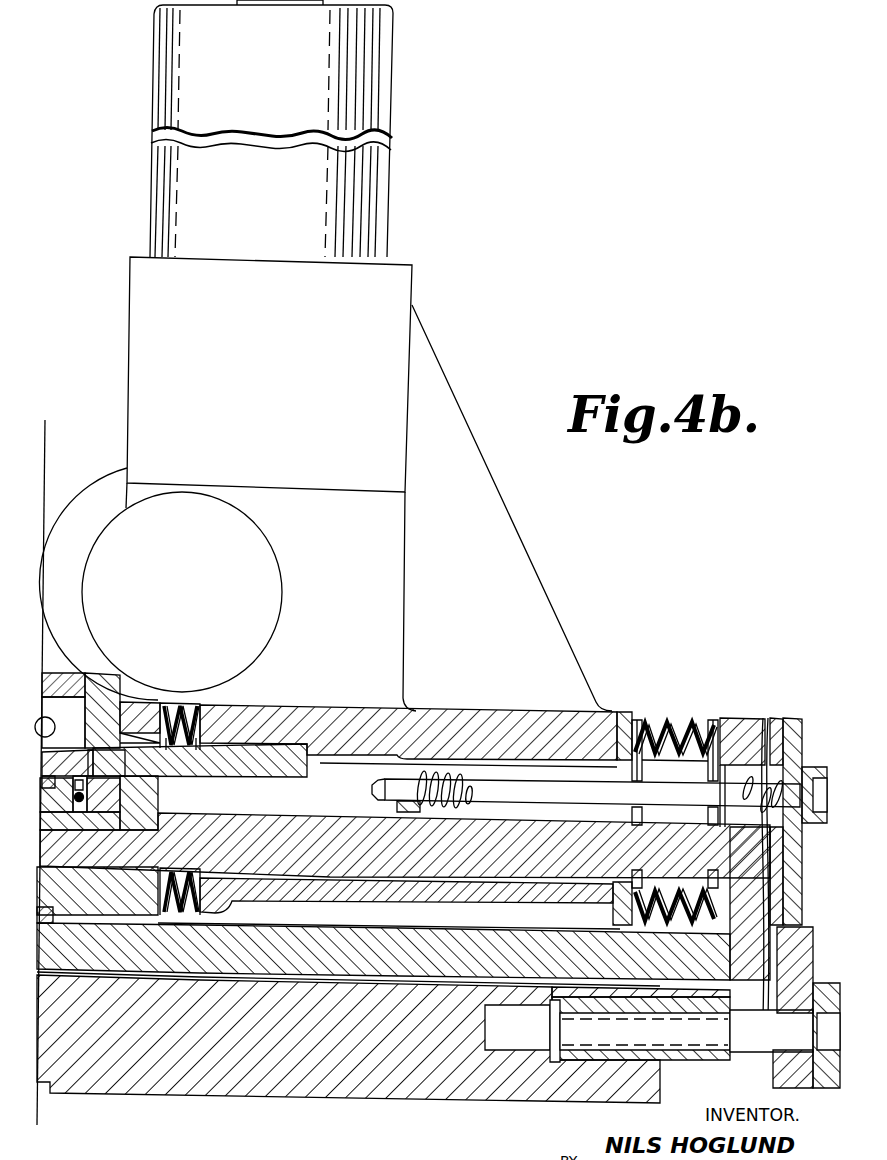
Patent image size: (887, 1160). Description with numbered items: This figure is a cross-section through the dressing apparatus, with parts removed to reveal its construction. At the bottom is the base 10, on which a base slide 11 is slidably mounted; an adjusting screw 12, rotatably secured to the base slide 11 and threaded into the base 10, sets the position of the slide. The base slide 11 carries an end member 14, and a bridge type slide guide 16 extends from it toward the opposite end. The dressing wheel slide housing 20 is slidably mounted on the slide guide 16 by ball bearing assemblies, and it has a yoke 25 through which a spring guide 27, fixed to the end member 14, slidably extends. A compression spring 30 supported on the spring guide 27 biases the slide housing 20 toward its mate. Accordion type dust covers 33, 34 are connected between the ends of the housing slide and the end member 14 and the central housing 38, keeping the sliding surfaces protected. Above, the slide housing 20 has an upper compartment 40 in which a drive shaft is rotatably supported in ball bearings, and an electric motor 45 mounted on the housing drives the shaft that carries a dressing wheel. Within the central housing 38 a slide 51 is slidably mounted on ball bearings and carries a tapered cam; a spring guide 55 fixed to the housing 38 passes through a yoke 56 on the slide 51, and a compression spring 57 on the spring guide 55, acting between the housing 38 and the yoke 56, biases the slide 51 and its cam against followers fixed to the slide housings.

The base 10 is at (400, 1092).
The base slide 11 is at (728, 966).
The adjusting screw 12 is at (832, 985).
The end member 14 is at (748, 726).
The slide guide 16 is at (745, 853).
The dressing wheel slide housing 20 is at (511, 718).
The yoke 25 is at (397, 805).
The spring guide 27 is at (530, 780).
The compression spring 30 is at (447, 758).
The accordion type dust cover 33 is at (683, 726).
The accordion type dust cover 34 is at (185, 704).
The central housing 38 is at (48, 722).
The upper compartment 40 is at (405, 302).
The electric motor 45 is at (372, 212).
The slide 51 is at (50, 802).
The spring guide 55 is at (104, 716).
The yoke 56 is at (102, 712).
The compression spring 57 is at (76, 712).